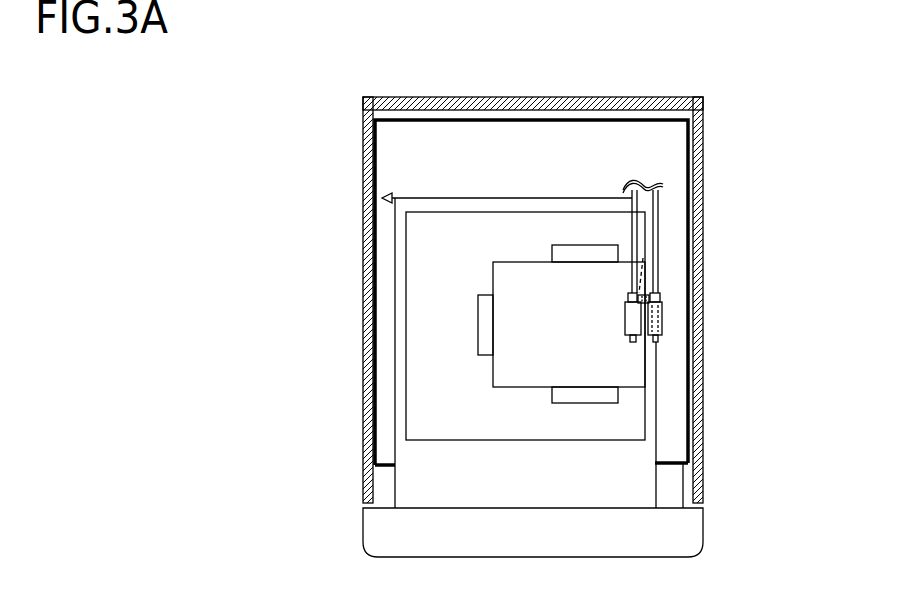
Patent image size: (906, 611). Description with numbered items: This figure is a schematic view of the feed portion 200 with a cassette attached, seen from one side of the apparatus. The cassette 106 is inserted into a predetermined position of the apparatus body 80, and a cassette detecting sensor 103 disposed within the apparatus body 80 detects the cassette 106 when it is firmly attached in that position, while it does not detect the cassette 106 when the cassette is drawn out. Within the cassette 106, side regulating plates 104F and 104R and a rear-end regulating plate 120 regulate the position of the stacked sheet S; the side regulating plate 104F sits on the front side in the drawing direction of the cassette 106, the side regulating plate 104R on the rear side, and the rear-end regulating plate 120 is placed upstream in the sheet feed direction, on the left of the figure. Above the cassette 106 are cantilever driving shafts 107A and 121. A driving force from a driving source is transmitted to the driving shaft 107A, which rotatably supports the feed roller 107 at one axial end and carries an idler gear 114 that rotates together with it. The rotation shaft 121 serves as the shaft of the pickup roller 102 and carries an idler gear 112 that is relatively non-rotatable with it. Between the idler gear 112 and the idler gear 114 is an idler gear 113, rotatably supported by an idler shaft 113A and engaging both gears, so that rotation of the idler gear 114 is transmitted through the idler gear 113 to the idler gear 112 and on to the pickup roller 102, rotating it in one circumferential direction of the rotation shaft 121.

The housing 200 is at (557, 88).
The cassette detecting sensor 103 is at (382, 195).
The apparatus body 80 is at (702, 481).
The cassette 106 is at (410, 500).
The sheet S is at (513, 377).
The side regulating plate 104R is at (588, 245).
The side regulating plate 104F is at (585, 403).
The rear-end regulating plate 120 is at (483, 323).
The rotation shaft 121 is at (632, 226).
The driving shaft 107A is at (660, 221).
The idler gear 113 is at (650, 277).
The idler shaft 113A is at (652, 250).
The idler gear 112 is at (628, 297).
The pickup roller 102 is at (625, 323).
The idler gear 114 is at (662, 297).
The feed roller 107 is at (662, 325).